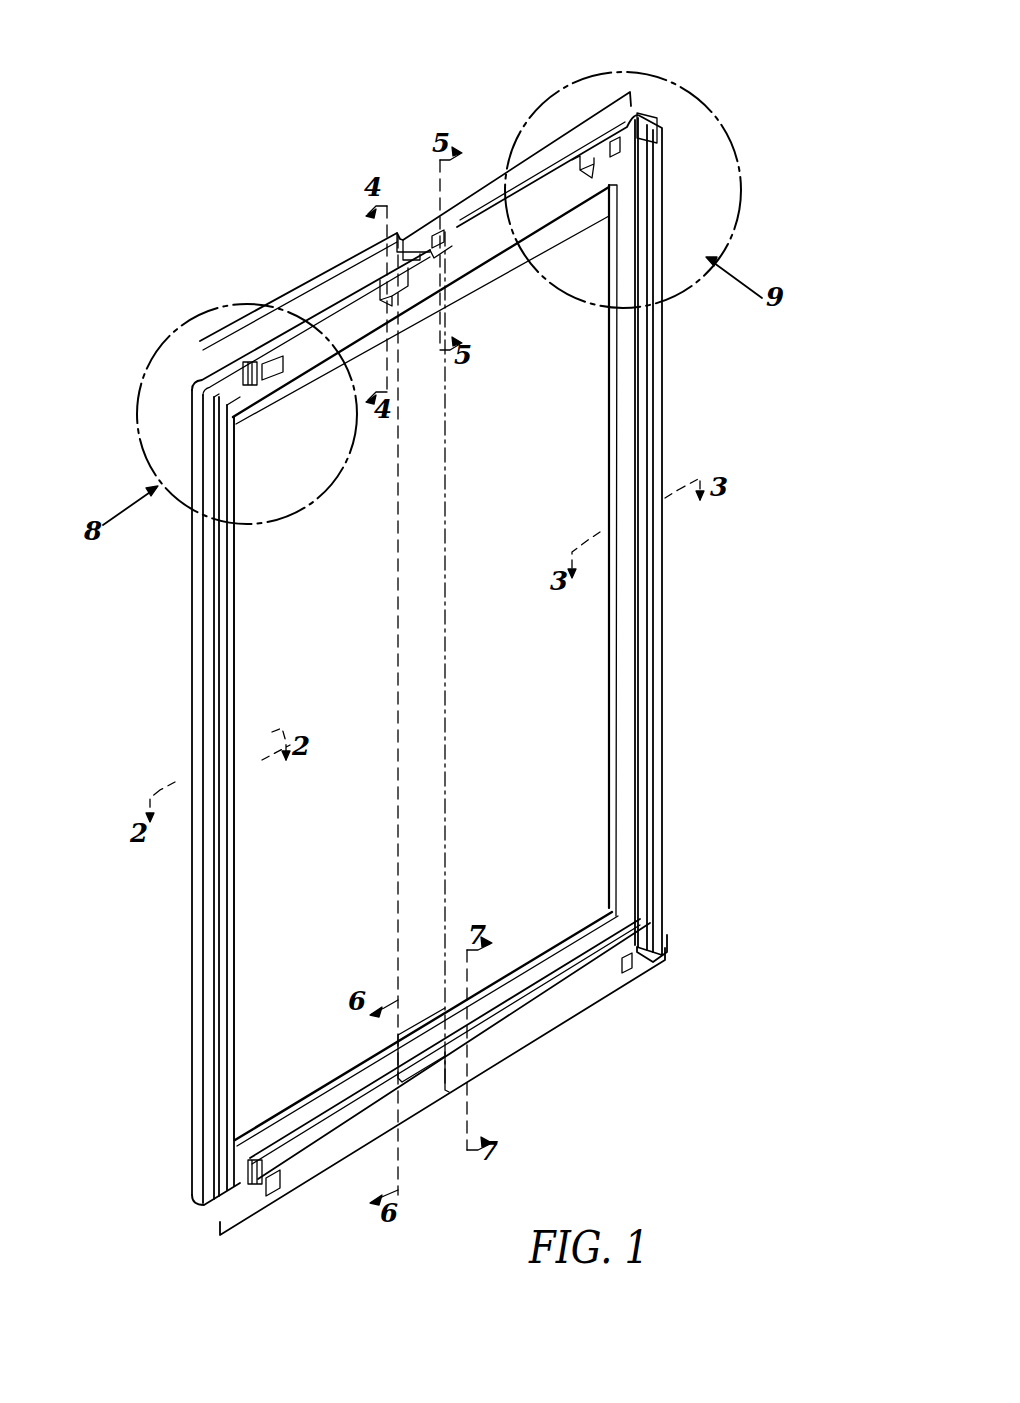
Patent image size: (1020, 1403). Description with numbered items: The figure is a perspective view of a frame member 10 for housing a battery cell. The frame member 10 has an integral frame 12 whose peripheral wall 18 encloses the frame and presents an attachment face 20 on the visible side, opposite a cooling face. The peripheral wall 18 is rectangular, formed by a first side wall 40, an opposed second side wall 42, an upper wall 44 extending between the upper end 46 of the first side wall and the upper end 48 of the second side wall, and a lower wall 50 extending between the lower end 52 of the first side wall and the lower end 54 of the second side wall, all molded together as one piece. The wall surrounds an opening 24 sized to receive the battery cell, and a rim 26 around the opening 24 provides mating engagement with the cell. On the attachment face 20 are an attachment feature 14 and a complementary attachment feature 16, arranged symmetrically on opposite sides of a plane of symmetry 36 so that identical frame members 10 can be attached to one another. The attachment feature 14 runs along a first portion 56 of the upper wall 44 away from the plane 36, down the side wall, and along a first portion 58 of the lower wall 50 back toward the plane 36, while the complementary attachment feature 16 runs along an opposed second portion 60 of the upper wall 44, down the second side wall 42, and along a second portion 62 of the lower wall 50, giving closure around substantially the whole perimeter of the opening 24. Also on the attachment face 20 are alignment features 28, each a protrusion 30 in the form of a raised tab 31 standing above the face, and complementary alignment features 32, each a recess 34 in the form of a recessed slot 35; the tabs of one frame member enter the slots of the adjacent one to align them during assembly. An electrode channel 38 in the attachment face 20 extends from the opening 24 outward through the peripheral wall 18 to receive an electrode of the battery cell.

The frame member 10 is at (740, 126).
The integral frame 12 is at (190, 748).
The attachment feature 14 is at (282, 350).
The complementary attachment feature 16 is at (480, 120).
The peripheral wall 18 is at (502, 210).
The attachment face 20 is at (512, 265).
The opening 24 is at (572, 432).
The rim 26 is at (628, 825).
The alignment feature 28 is at (250, 362).
The protrusion 30 is at (254, 388).
The raised tab 31 is at (240, 374).
The complementary alignment feature 32 is at (598, 138).
The recess 34 is at (652, 136).
The recessed slot 35 is at (592, 200).
The plane of symmetry 36 is at (450, 718).
The electrode channel 38 is at (352, 325).
The first side wall 40 is at (210, 876).
The second side wall 42 is at (650, 740).
The upper wall 44 is at (486, 276).
The upper end of first side wall 46 is at (236, 462).
The upper end of second side wall 48 is at (664, 190).
The lower wall 50 is at (562, 930).
The lower end of first side wall 52 is at (216, 1128).
The lower end of second side wall 54 is at (666, 926).
The first portion of upper wall 56 is at (190, 358).
The first portion of lower wall 58 is at (362, 1164).
The second portion of upper wall 60 is at (432, 242).
The second portion of lower wall 62 is at (606, 1100).